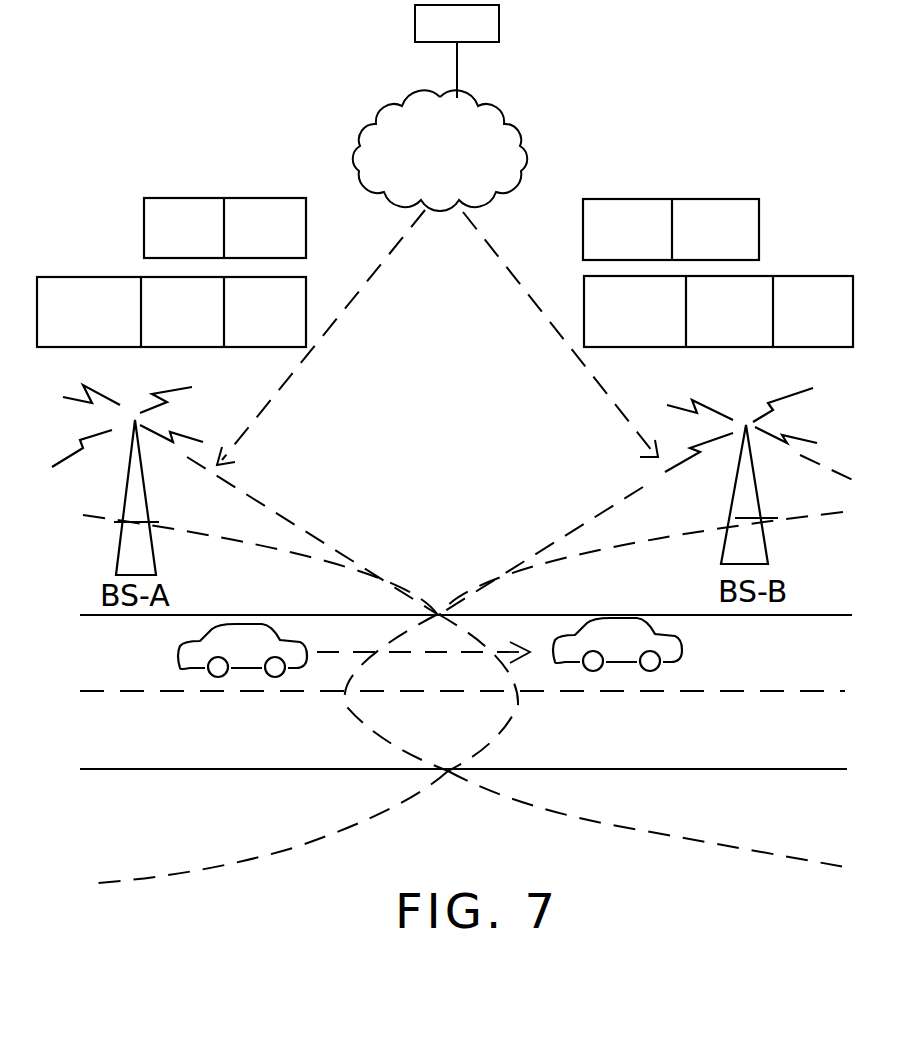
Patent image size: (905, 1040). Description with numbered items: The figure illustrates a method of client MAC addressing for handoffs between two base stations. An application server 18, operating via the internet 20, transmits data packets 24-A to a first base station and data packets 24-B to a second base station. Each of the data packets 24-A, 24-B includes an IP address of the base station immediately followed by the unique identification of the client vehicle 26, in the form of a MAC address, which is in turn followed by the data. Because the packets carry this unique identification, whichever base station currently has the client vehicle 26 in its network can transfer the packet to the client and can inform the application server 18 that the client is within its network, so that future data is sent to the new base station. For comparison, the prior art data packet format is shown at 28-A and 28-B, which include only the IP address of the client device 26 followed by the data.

The application server 18 is at (457, 51).
The internet 20 is at (440, 150).
The data packets 24-A is at (73, 277).
The prior art data packet format 28-A is at (199, 198).
The data packets 24-B is at (787, 276).
The prior art data packet format 28-B is at (632, 199).
The client vehicle 26 is at (430, 647).